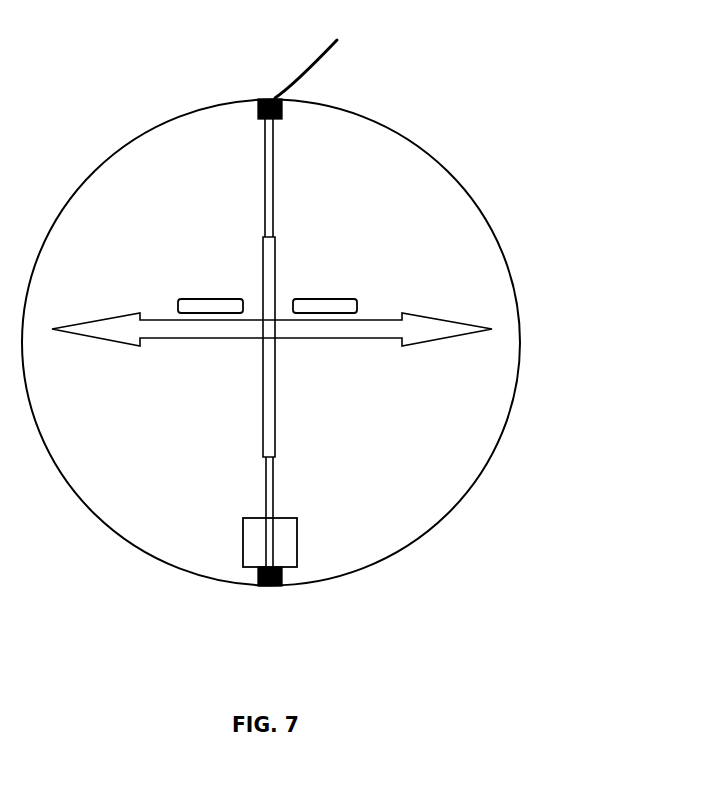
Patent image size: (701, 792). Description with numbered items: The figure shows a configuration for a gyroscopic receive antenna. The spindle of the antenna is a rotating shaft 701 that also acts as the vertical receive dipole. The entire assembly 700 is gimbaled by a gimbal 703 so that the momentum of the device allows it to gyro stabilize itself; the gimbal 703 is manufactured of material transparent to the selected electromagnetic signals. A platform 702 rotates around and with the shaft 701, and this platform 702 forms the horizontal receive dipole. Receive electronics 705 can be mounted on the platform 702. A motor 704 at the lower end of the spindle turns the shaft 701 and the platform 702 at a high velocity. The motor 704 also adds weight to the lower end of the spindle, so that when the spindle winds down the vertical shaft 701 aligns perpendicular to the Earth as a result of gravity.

The assembly 700 is at (440, 86).
The rotating shaft 701 is at (275, 166).
The platform 702 is at (77, 325).
The gimbal 703 is at (521, 376).
The motor 704 is at (297, 545).
The receive electronics 705 is at (340, 299).